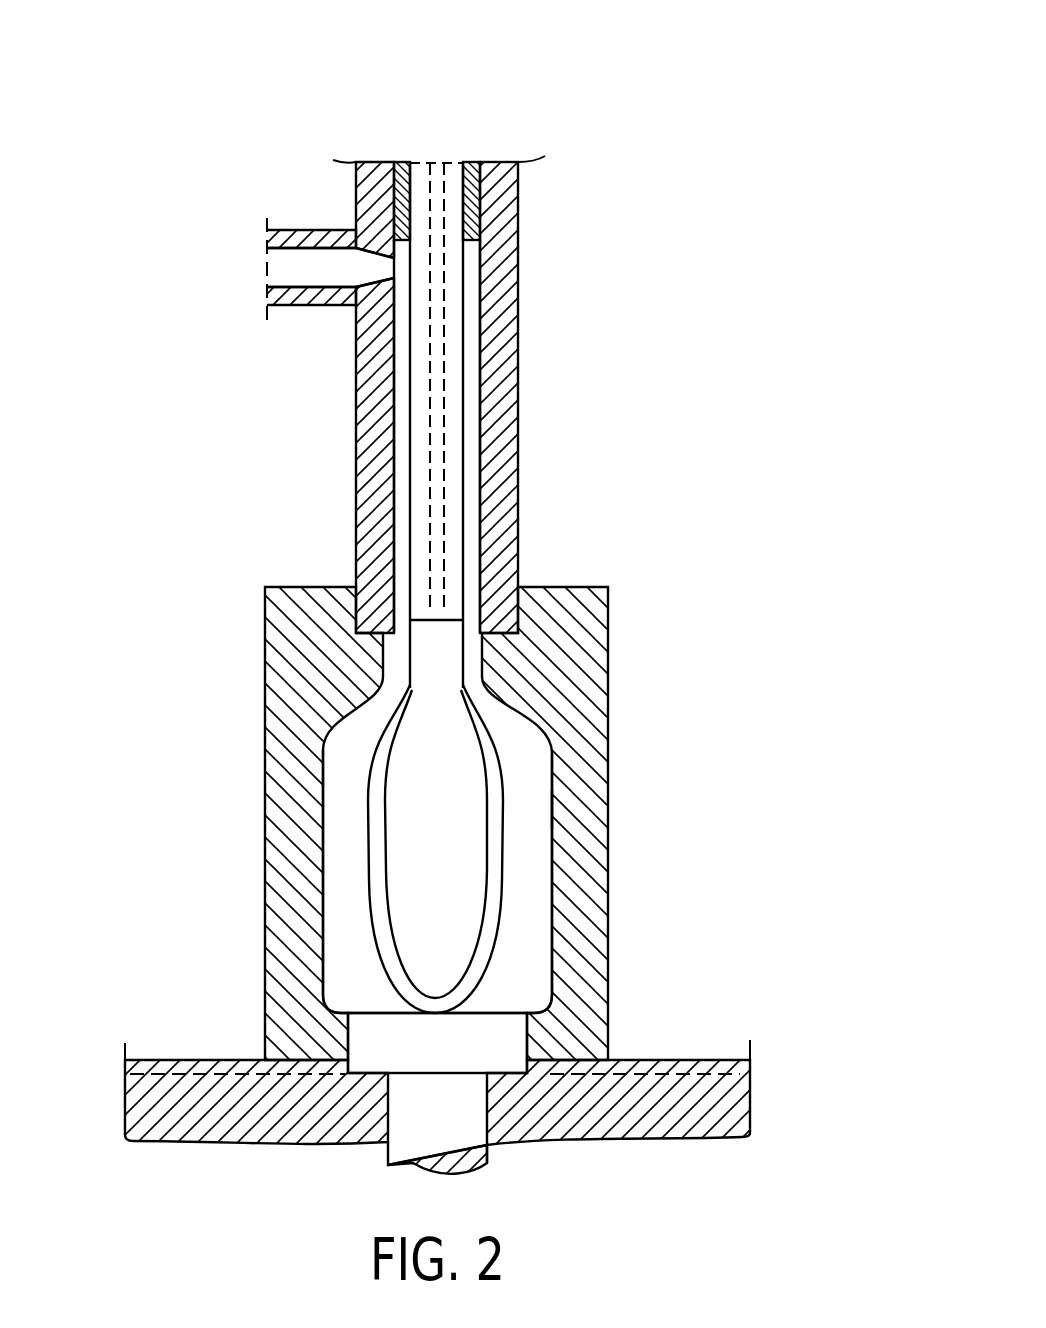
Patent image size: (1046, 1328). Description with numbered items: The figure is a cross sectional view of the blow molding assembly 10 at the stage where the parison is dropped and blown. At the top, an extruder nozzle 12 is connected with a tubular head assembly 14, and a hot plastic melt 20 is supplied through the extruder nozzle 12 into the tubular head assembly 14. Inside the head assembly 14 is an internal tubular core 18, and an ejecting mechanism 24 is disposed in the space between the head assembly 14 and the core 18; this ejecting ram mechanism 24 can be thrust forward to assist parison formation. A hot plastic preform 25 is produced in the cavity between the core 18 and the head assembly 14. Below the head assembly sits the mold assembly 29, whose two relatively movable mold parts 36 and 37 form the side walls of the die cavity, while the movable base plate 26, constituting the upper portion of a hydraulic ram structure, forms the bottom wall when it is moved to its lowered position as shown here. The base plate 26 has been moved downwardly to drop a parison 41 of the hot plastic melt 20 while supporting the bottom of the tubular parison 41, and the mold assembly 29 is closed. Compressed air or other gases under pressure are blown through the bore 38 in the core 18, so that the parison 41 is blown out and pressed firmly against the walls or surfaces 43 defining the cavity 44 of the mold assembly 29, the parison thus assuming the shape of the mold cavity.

The blow molding assembly 10 is at (648, 88).
The extruder nozzle 12 is at (305, 240).
The tubular head assembly 14 is at (377, 453).
The tubular core 18 is at (455, 297).
The hot plastic melt 20 is at (358, 273).
The ejecting mechanism 24 is at (473, 192).
The hot plastic preform 25 is at (468, 390).
The movable base plate 26 is at (413, 1062).
The mold assembly 29 is at (609, 578).
The mold part 36 is at (595, 873).
The mold part 37 is at (283, 867).
The bore 38 is at (443, 487).
The parison 41 is at (488, 727).
The mold cavity surfaces 43 is at (553, 805).
The mold cavity 44 is at (347, 945).